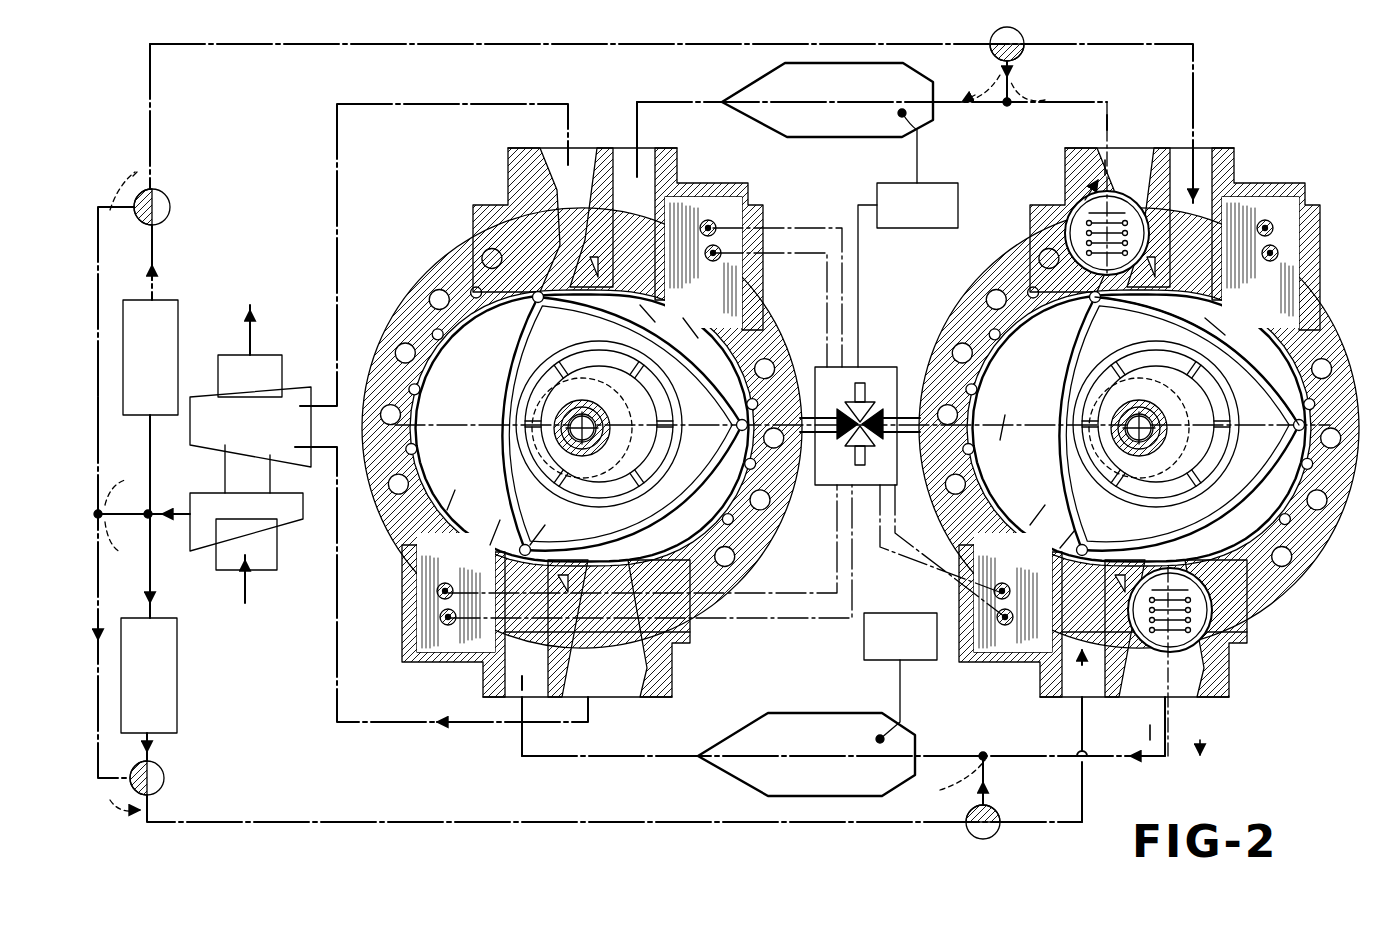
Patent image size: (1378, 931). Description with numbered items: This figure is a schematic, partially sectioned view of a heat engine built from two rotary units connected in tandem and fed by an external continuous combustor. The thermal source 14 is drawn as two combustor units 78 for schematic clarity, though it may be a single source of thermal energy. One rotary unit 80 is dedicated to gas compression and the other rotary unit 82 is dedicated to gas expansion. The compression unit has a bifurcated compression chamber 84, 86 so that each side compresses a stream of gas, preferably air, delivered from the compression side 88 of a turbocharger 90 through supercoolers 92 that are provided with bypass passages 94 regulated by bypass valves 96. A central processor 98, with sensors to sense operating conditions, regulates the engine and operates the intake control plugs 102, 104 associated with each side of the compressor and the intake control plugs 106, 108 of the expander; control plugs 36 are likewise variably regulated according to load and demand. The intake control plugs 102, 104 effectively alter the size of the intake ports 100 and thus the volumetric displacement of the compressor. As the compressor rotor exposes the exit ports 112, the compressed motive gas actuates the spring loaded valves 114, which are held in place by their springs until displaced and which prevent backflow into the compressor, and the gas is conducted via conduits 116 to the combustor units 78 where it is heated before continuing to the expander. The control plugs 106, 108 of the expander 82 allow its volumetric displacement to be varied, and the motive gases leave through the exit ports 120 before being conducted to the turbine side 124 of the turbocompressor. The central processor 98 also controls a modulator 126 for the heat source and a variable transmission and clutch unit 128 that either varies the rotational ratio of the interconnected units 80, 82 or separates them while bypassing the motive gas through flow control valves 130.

The thermal source 14 is at (818, 140).
The control plugs 36 is at (1033, 637).
The combustor units 78 is at (767, 83).
The rotary unit 80 is at (1330, 306).
The rotary unit 82 is at (441, 268).
The compression chamber 84 is at (1020, 408).
The compression chamber 86 is at (1257, 351).
The compression side 88 is at (280, 520).
The turbocharger 90 is at (225, 470).
The supercoolers 92 is at (177, 305).
The bypass passages 94 is at (98, 550).
The bypass valves 96 is at (170, 210).
The central processor 98 is at (860, 372).
The intake ports 100 is at (653, 150).
The intake control plug 102 is at (1248, 223).
The intake control plug 104 is at (1320, 240).
The intake control plug 106 is at (695, 197).
The intake control plug 108 is at (740, 240).
The exit ports 112 is at (1157, 163).
The spring loaded valves 114 is at (1203, 647).
The conduits 116 is at (1022, 102).
The exit ports 120 is at (337, 140).
The turbine side 124 is at (258, 356).
The modulator 126 is at (913, 598).
The variable transmission and clutch unit 128 is at (877, 400).
The flow control valves 130 is at (1024, 44).